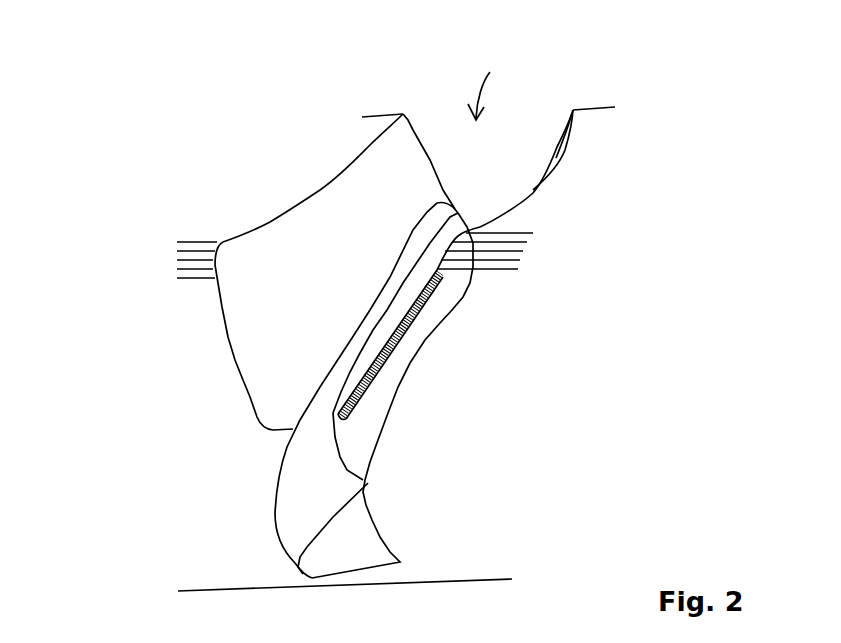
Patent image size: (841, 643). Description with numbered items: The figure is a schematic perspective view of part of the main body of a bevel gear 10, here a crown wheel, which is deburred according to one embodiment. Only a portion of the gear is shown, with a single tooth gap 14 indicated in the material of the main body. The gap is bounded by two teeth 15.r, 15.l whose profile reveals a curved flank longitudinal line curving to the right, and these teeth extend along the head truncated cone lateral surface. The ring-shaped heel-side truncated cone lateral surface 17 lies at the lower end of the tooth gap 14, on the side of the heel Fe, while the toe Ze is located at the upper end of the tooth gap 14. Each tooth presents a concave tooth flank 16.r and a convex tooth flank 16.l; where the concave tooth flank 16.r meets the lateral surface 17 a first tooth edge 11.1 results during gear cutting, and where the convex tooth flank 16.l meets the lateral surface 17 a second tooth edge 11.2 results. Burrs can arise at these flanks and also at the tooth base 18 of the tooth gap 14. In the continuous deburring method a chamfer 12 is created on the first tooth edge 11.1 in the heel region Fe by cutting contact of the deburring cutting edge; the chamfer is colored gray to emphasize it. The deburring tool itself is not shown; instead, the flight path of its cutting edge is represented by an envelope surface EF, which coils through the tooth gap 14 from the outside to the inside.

The bevel gear 10 is at (57, 130).
The first tooth edge 11.1 is at (405, 325).
The second tooth edge 11.2 is at (227, 327).
The chamfer 12 is at (357, 383).
The tooth gap 14 is at (494, 91).
The tooth 15.l is at (317, 157).
The tooth 15.r is at (598, 147).
The convex tooth flank 16.l is at (297, 233).
The concave tooth flank 16.r is at (570, 113).
The truncated cone lateral surface 17 is at (225, 570).
The tooth base 18 is at (268, 428).
The toe Ze is at (472, 71).
The envelope surface EF is at (303, 510).
The heel Fe is at (412, 624).